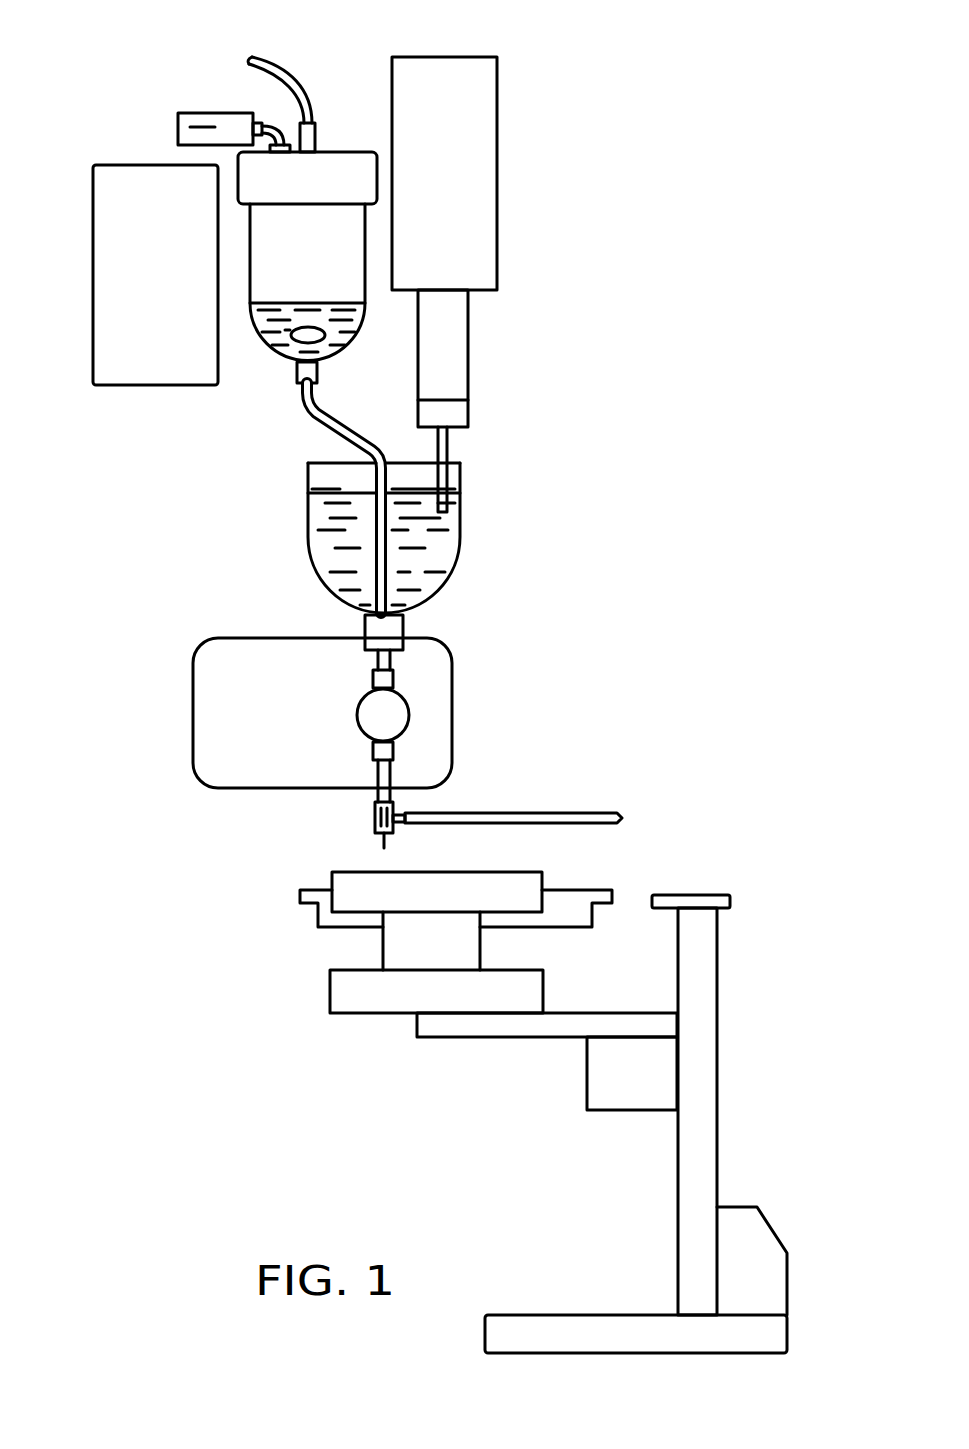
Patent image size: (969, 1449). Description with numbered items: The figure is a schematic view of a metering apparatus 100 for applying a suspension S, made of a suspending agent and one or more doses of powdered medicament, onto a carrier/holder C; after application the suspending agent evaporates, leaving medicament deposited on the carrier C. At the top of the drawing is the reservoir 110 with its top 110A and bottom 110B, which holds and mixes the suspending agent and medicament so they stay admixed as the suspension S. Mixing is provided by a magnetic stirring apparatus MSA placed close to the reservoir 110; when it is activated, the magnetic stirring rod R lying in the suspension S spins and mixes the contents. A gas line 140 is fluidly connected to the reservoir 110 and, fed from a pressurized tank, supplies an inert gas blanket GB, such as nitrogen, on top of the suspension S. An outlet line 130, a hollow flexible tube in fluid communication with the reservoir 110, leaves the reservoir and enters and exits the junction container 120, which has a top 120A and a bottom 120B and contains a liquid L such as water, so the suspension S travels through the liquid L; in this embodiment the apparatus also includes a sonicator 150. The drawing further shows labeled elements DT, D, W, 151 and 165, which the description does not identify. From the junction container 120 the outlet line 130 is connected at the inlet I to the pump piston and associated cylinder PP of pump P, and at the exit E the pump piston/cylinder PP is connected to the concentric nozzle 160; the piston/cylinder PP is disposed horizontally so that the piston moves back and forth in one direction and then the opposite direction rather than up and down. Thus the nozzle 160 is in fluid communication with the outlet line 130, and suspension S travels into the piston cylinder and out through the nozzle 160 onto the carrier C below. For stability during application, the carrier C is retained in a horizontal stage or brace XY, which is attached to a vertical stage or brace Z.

The metering apparatus 100 is at (94, 98).
The reservoir 110 is at (250, 308).
The top of reservoir 110A is at (343, 200).
The bottom of reservoir 110B is at (468, 400).
The junction container 120 is at (310, 540).
The top of junction container 120A is at (318, 463).
The bottom of junction container 120B is at (413, 608).
The outlet line 130 is at (312, 418).
The gas line 140 is at (272, 62).
The sonicator 150 is at (468, 200).
The probe / pipe 151 is at (458, 518).
The concentric nozzle 160 is at (362, 814).
The sensor bar 165 is at (520, 812).
The magnetic stirring apparatus MSA is at (180, 304).
The detector DT is at (190, 113).
The detector output D is at (208, 128).
The gas blanket GB is at (327, 281).
The magnetic stirring rod R is at (293, 340).
The suspension S is at (350, 330).
The water level W is at (320, 490).
The liquid L is at (438, 563).
The pump P is at (287, 730).
The pump piston and associated cylinder PP is at (396, 715).
The inlet I is at (388, 680).
The exit E is at (393, 752).
The horizontal stage or brace XY is at (515, 872).
The carrier/holder C is at (585, 890).
The vertical stage or brace Z is at (770, 1027).